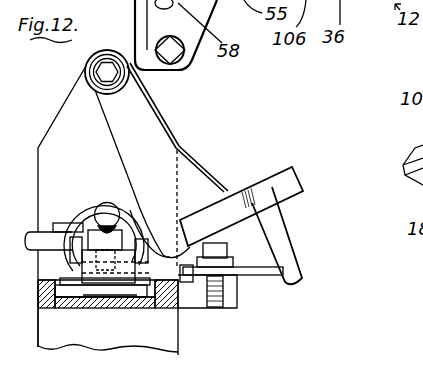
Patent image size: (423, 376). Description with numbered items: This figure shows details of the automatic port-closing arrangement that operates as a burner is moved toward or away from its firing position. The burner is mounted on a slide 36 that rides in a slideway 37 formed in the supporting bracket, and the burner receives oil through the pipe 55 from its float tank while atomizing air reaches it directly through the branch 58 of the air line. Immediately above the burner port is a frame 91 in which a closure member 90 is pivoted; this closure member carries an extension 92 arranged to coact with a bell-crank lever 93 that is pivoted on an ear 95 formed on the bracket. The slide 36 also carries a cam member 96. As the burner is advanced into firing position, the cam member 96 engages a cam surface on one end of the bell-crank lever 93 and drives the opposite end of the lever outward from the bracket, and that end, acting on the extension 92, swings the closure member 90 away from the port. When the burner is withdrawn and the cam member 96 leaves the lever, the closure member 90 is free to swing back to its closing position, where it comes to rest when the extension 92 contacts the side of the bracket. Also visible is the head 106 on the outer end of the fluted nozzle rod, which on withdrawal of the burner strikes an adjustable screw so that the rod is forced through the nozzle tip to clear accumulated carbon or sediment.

The slide 36 is at (62, 263).
The slideway 37 is at (98, 309).
The pipe 55 is at (64, 214).
The branch 58 is at (35, 236).
The closure member 90 is at (145, 112).
The frame 91 is at (76, 102).
The extension 92 is at (278, 247).
The bell-crank lever 93 is at (250, 273).
The ear 95 is at (226, 301).
The cam member 96 is at (162, 227).
The head 106 is at (106, 203).